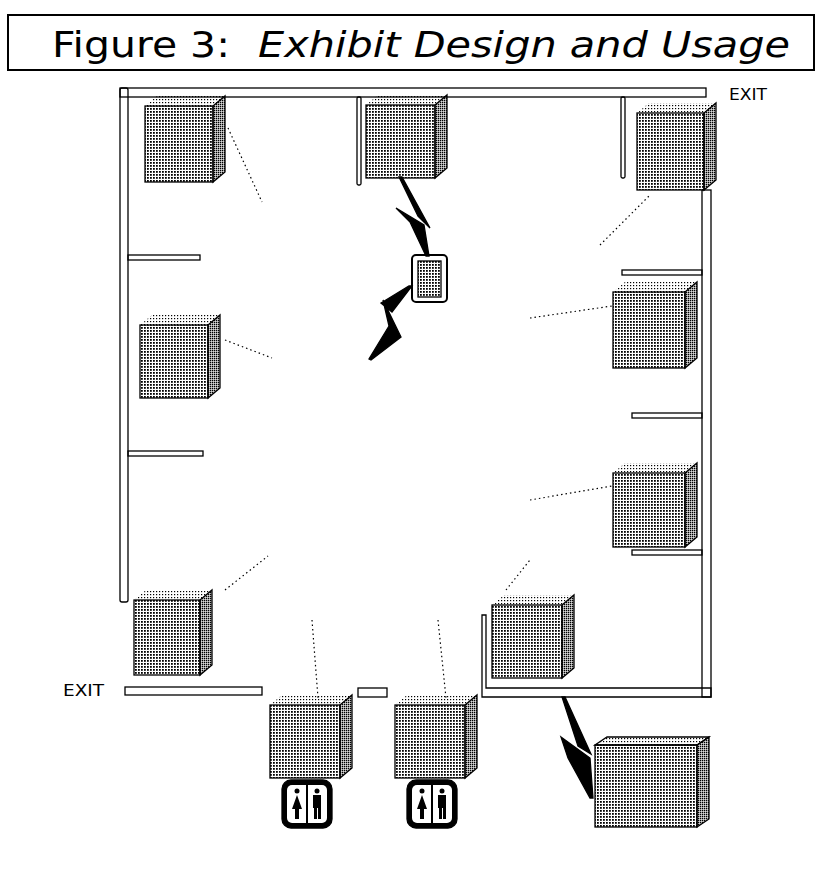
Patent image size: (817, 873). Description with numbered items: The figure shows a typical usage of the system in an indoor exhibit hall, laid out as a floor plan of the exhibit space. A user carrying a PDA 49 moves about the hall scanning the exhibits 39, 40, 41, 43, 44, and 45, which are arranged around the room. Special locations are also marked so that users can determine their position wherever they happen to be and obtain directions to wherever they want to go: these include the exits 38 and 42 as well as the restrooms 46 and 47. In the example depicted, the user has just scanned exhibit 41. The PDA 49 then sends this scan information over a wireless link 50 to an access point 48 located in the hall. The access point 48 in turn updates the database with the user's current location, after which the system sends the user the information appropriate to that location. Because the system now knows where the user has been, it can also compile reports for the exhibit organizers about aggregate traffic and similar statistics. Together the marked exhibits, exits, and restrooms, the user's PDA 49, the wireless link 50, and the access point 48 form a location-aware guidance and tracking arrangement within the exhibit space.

The exit 38 is at (173, 620).
The exhibit 39 is at (180, 342).
The exhibit 40 is at (185, 150).
The exhibit 41 is at (420, 136).
The exit 42 is at (693, 146).
The exhibit 43 is at (644, 325).
The exhibit 44 is at (642, 505).
The exhibit 45 is at (547, 636).
The restroom 46 is at (452, 761).
The restroom 47 is at (299, 761).
The access point 48 is at (666, 778).
The PDA 49 is at (440, 292).
The wireless link 50 is at (387, 323).